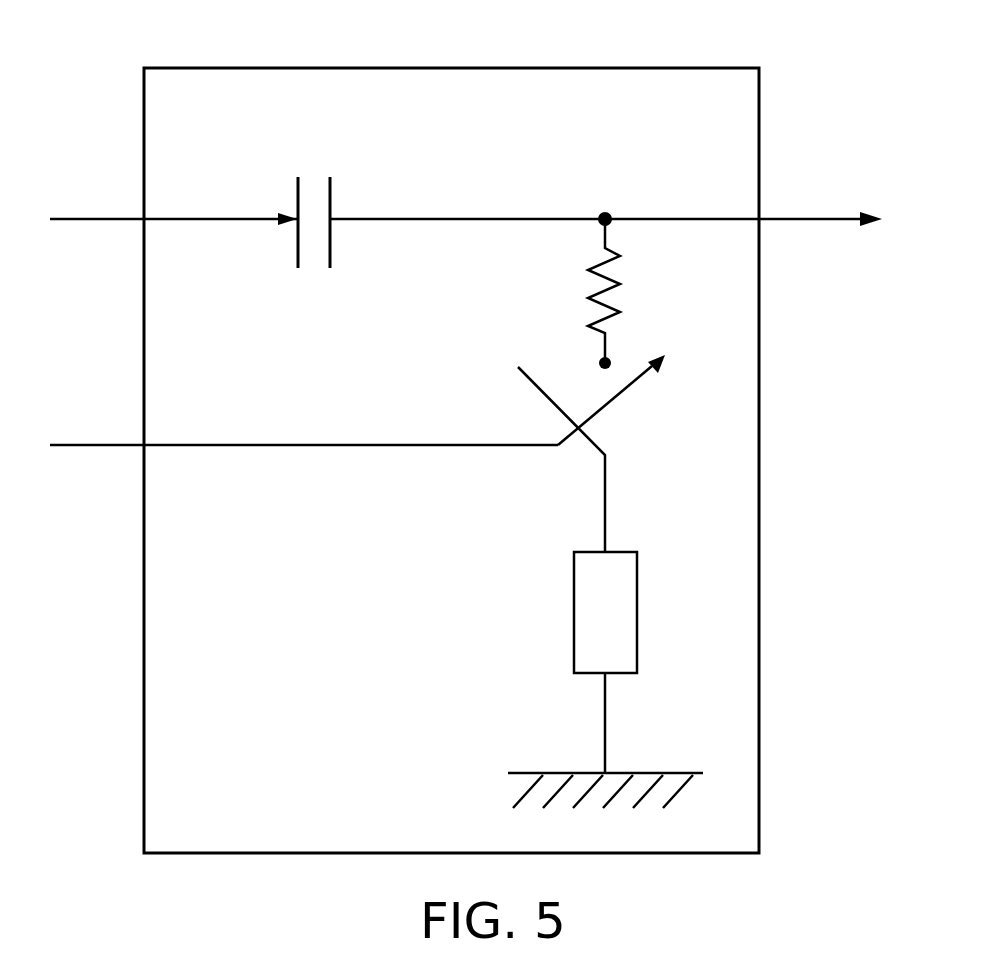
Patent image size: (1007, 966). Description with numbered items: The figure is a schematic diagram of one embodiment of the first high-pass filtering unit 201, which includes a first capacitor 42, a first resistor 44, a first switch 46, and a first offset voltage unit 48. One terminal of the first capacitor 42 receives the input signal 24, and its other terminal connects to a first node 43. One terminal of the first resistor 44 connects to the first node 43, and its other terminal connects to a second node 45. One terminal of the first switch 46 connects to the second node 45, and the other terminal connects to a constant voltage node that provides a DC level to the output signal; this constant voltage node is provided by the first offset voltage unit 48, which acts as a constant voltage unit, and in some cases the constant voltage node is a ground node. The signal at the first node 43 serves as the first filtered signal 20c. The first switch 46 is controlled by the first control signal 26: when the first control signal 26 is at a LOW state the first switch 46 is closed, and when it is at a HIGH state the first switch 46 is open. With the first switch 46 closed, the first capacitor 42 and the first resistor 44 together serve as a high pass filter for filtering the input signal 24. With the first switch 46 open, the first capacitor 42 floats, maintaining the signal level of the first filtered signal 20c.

The first high-pass filtering unit 201 is at (492, 66).
The input signal 24 is at (113, 215).
The first capacitor 42 is at (315, 205).
The first node 43 is at (605, 213).
The first filtered signal 20c is at (789, 216).
The first resistor 44 is at (615, 308).
The second node 45 is at (597, 362).
The first control signal 26 is at (109, 443).
The first switch 46 is at (593, 440).
The first offset voltage unit 48 is at (637, 565).